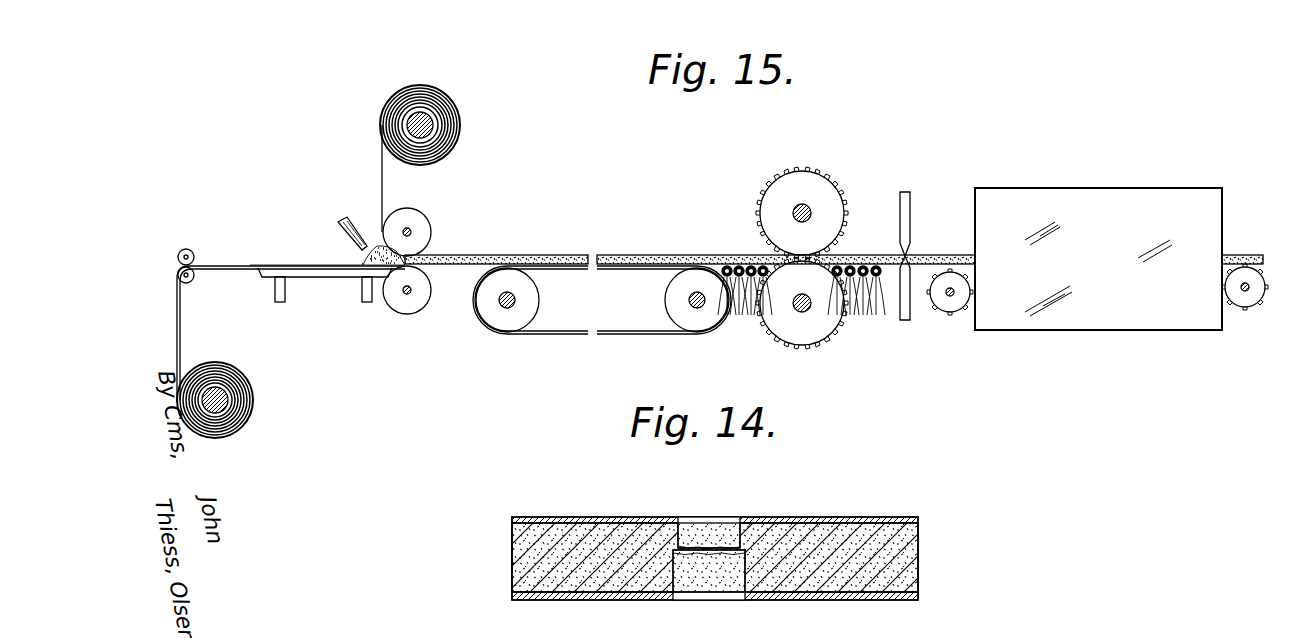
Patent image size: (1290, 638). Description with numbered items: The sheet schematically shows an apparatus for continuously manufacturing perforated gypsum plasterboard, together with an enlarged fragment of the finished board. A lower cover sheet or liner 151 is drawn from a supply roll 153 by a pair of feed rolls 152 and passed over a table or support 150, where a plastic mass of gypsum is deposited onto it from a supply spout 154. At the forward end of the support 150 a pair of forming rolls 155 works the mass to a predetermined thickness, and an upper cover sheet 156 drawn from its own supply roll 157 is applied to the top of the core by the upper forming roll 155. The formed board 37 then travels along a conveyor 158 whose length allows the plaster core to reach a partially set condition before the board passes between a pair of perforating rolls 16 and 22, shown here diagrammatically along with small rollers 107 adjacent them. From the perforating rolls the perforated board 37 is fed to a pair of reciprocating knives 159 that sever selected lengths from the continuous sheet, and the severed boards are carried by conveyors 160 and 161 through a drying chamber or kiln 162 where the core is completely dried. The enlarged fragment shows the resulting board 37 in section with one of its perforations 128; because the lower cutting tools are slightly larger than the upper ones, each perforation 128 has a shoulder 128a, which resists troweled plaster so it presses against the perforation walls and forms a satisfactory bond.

In FIG. 15, the perforating roll 16 is at (788, 328).
In FIG. 15, the perforating roll 22 is at (826, 214).
In FIG. 15, the board 37 is at (524, 257).
In FIG. 14, the board 37 is at (780, 520).
In FIG. 15, the small rollers with strands 107 is at (800, 303).
In FIG. 14, the perforation 128 is at (694, 533).
In FIG. 14, the shoulder 128a is at (730, 565).
In FIG. 15, the table or support 150 is at (342, 272).
In FIG. 15, the lower cover sheet or liner 151 is at (296, 265).
In FIG. 15, the feed rolls 152 is at (180, 259).
In FIG. 15, the supply roll 153 is at (253, 412).
In FIG. 15, the supply spout 154 is at (353, 220).
In FIG. 15, the forming rolls 155 is at (418, 232).
In FIG. 15, the upper cover sheet 156 is at (382, 150).
In FIG. 15, the supply roll 157 is at (462, 117).
In FIG. 15, the conveyor 158 is at (556, 270).
In FIG. 15, the reciprocating knives 159 is at (908, 215).
In FIG. 15, the conveyor 160 is at (956, 314).
In FIG. 15, the conveyor 161 is at (1245, 310).
In FIG. 15, the drying chamber or kiln 162 is at (1088, 206).